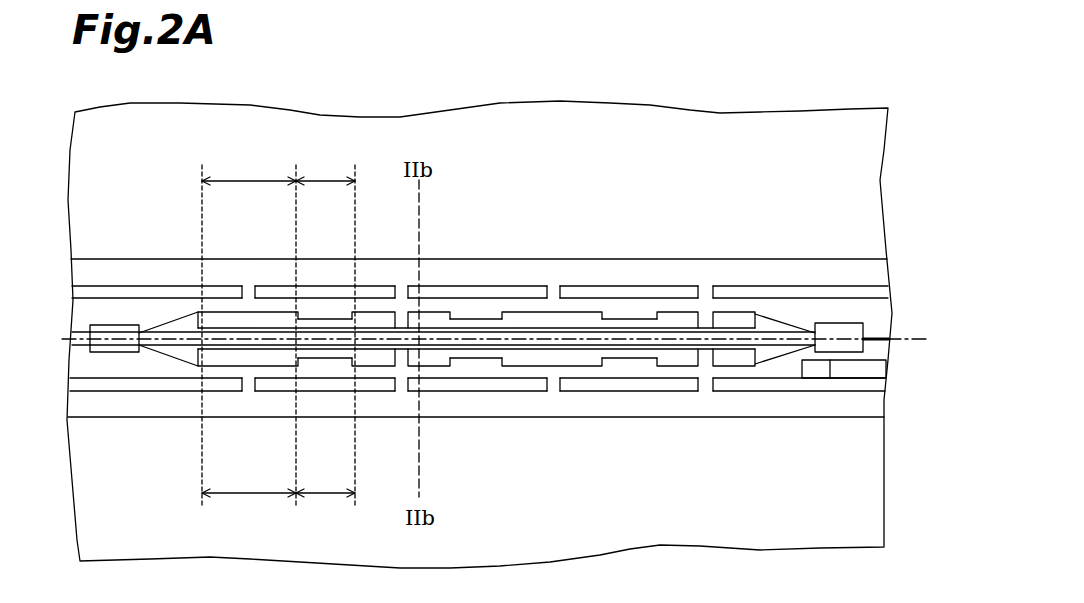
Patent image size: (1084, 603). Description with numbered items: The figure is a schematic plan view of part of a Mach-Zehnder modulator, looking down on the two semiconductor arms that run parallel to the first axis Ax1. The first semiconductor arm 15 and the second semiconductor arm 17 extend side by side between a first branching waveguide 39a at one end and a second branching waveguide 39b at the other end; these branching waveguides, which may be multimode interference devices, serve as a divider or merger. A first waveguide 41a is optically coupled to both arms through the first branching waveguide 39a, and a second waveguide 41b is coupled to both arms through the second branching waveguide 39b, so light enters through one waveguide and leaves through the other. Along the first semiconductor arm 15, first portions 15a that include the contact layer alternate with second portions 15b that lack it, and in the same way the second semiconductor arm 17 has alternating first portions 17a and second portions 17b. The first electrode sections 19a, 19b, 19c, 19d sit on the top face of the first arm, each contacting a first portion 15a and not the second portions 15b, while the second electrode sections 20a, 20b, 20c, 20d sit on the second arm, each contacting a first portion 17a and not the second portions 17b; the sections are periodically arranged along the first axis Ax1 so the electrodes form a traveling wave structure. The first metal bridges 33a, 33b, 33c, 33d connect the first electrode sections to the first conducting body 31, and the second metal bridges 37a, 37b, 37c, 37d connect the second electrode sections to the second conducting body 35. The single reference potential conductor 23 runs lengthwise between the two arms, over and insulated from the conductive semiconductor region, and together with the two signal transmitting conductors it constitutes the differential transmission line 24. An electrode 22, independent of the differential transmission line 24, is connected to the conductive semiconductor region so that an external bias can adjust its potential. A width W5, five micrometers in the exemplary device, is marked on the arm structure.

The first semiconductor arm 15 is at (768, 312).
The first portions of the first semiconductor arm 15a is at (250, 179).
The second portions of the first semiconductor arm 15b is at (322, 179).
The second semiconductor arm 17 is at (771, 350).
The first portions of the second semiconductor arm 17a is at (248, 495).
The second portions of the second semiconductor arm 17b is at (327, 495).
The first electrode section 19a is at (268, 311).
The first electrode section 19b is at (428, 316).
The first electrode section 19c is at (569, 311).
The first electrode section 19d is at (723, 311).
The second electrode section 20a is at (217, 367).
The second electrode section 20b is at (352, 367).
The second electrode section 20c is at (537, 367).
The second electrode section 20d is at (673, 367).
The electrode 22 is at (817, 372).
The reference potential conductor 23 is at (634, 330).
The differential transmission line 24 is at (485, 250).
The first conducting body 31 is at (820, 292).
The first metal bridge 33a is at (248, 289).
The first metal bridge 33b is at (400, 300).
The first metal bridge 33c is at (550, 292).
The first metal bridge 33d is at (706, 292).
The second conducting body 35 is at (868, 386).
The second metal bridge 37a is at (255, 393).
The second metal bridge 37b is at (398, 393).
The second metal bridge 37c is at (552, 384).
The second metal bridge 37d is at (705, 380).
The first branching waveguide 39a is at (107, 325).
The second branching waveguide 39b is at (847, 354).
The first waveguide 41a is at (88, 354).
The second waveguide 41b is at (871, 330).
The width W5 is at (366, 318).
The first axis Ax1 is at (499, 373).